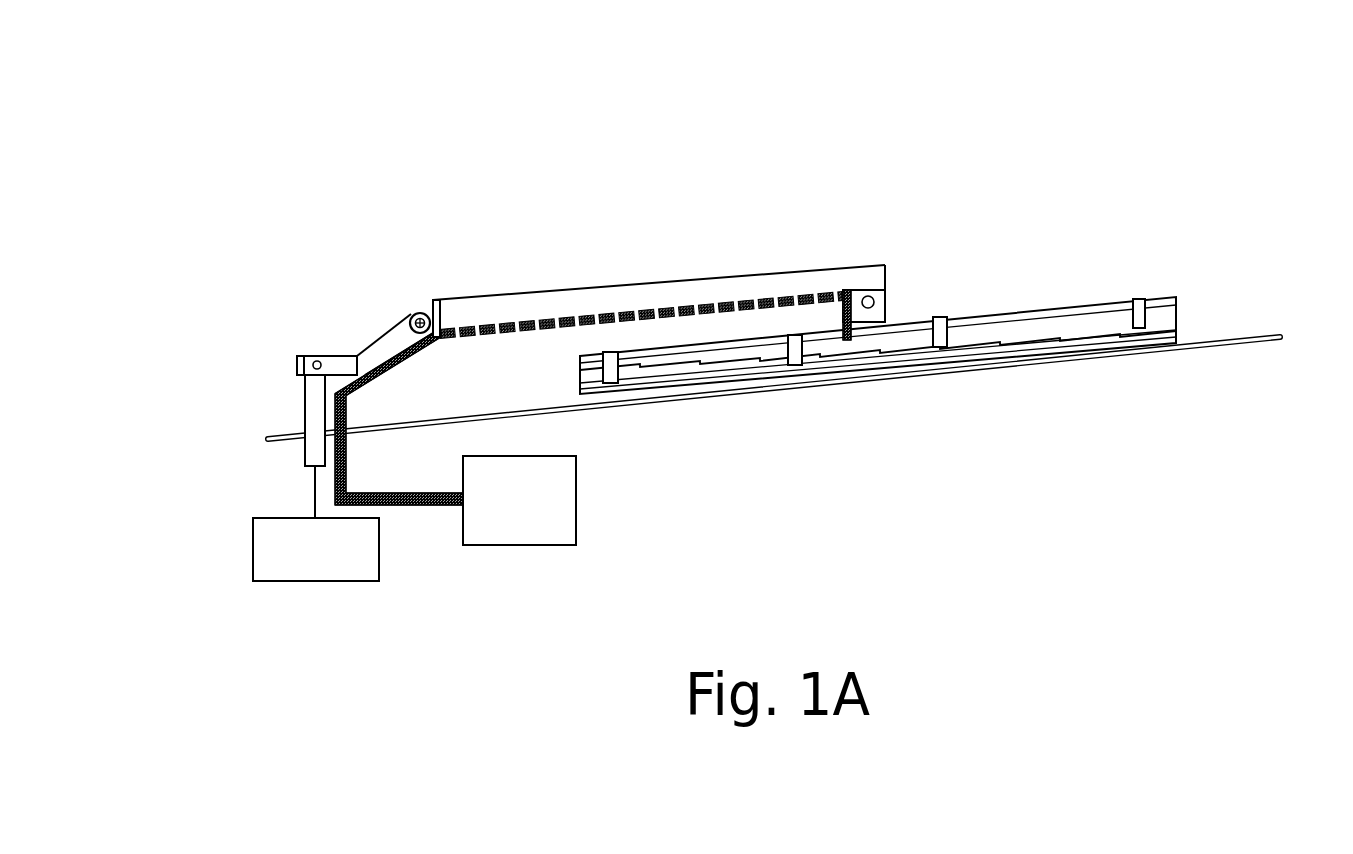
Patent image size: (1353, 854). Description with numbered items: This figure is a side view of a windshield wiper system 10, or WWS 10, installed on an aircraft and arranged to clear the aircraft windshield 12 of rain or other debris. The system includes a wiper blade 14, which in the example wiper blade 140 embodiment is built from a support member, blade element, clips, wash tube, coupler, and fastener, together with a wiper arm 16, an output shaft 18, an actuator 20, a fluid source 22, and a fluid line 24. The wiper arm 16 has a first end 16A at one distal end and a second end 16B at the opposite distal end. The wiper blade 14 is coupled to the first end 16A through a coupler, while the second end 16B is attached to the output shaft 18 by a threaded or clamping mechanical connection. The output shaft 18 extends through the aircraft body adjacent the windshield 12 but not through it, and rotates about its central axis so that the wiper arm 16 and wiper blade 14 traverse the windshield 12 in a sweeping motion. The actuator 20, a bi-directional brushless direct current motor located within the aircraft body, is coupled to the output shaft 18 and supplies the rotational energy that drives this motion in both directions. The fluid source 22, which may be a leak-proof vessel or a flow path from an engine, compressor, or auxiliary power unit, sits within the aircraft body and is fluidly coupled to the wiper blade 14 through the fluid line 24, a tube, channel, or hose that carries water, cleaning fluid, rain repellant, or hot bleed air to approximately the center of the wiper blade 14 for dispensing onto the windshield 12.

The windshield wiper system 10 is at (219, 116).
The aircraft windshield 12 is at (1228, 342).
The wiper blade 14 is at (878, 284).
The wiper blade 140 is at (1071, 285).
The wiper arm 16 is at (626, 295).
The first end 16A is at (864, 273).
The second end 16B is at (333, 355).
The output shaft 18 is at (317, 405).
The actuator 20 is at (302, 560).
The fluid source 22 is at (510, 511).
The fluid line 24 is at (410, 505).